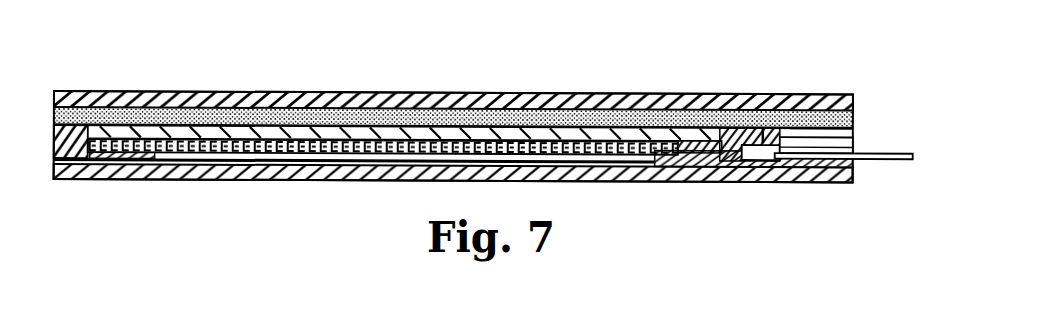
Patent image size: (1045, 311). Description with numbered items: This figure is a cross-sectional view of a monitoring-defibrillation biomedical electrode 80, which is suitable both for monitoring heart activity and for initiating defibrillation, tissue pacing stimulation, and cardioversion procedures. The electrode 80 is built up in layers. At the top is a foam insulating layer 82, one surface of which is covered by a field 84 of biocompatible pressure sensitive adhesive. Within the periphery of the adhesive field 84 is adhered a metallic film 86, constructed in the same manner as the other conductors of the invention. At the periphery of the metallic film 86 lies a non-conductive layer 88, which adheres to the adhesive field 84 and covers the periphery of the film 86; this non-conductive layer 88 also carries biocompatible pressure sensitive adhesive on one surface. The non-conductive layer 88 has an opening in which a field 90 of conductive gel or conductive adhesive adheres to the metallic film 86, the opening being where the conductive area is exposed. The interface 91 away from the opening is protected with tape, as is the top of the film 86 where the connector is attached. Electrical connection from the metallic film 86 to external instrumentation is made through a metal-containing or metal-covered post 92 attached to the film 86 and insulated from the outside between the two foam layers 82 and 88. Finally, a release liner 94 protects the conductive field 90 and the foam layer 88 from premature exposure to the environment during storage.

The electrode 80 is at (330, 65).
The foam insulating layer 82 is at (793, 102).
The field of biocompatible pressure sensitive adhesive 84 is at (855, 118).
The metallic film 86 is at (855, 135).
The non-conductive layer 88 is at (835, 164).
The field of conductive gel or conductive adhesive 90 is at (202, 140).
The interface 91 is at (698, 143).
The post 92 is at (768, 148).
The release liner 94 is at (630, 185).